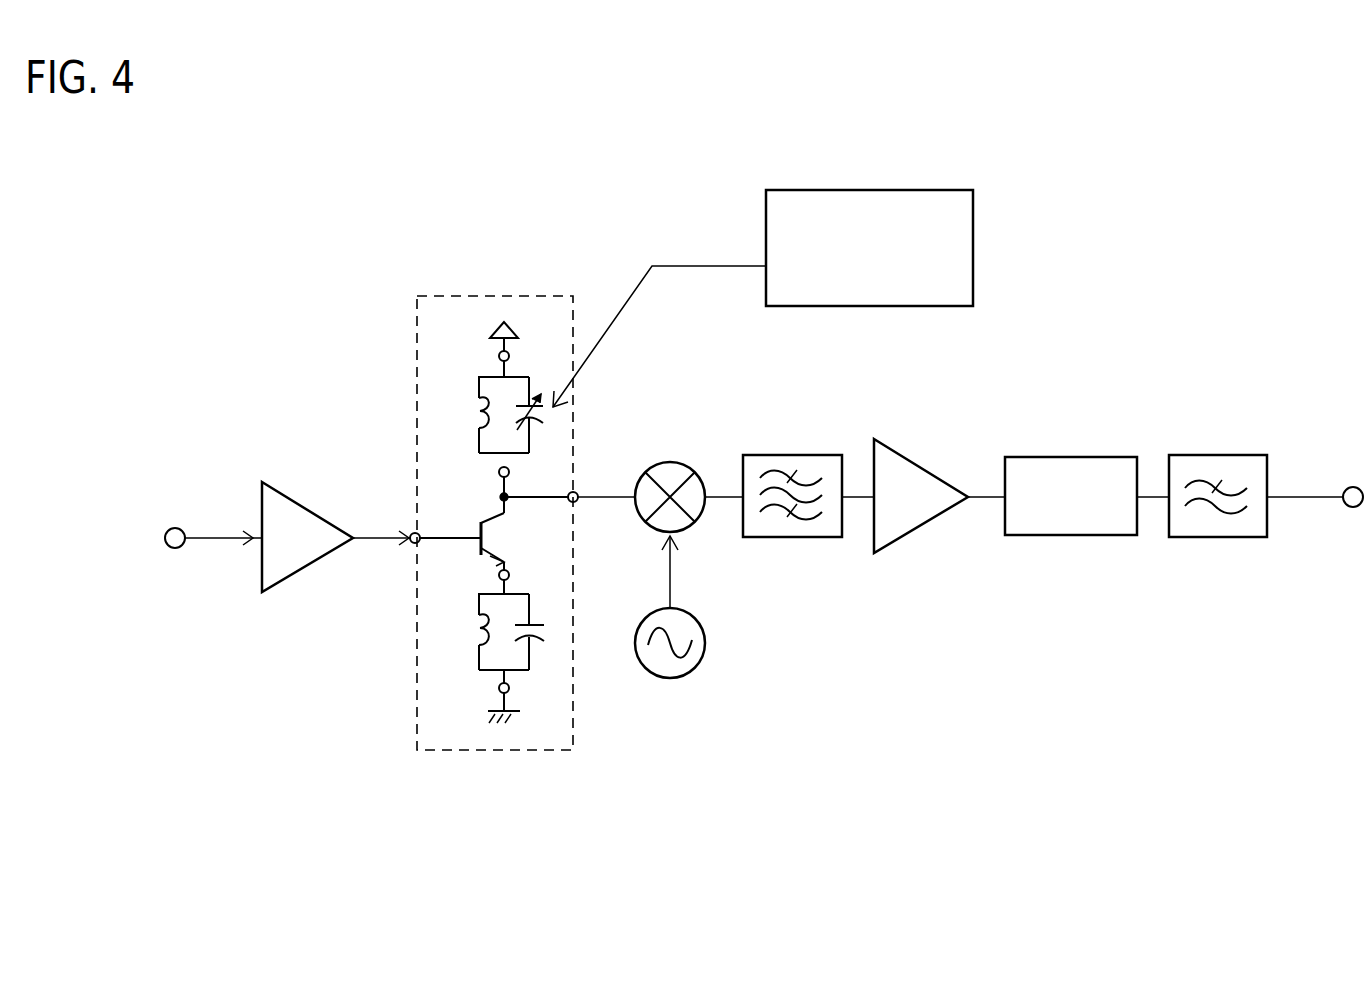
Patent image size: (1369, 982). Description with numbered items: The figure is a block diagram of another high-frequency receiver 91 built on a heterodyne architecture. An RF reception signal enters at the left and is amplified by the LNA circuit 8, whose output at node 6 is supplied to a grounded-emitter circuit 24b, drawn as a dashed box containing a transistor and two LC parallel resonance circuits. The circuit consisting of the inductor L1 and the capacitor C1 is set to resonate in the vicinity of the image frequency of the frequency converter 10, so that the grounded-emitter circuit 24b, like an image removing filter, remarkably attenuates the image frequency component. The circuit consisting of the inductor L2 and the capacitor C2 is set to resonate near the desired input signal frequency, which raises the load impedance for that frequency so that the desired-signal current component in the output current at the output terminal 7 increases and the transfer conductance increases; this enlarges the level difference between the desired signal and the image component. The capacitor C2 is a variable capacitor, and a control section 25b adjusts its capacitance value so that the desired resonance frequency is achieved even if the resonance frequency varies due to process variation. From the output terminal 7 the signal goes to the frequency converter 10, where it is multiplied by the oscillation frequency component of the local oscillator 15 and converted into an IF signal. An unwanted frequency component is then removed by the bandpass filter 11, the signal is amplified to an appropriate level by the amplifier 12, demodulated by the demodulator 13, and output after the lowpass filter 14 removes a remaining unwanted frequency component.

The high-frequency receiver 91 is at (298, 330).
The LNA circuit 8 is at (309, 510).
The input node 6 is at (417, 525).
The grounded-emitter circuit 24b is at (473, 296).
The inductor L2 is at (488, 415).
The capacitor C2 is at (543, 415).
The inductor L1 is at (487, 632).
The capacitor C1 is at (542, 632).
The output terminal 7 is at (569, 484).
The frequency converter 10 is at (671, 461).
The bandpass filter 11 is at (794, 455).
The amplifier 12 is at (921, 466).
The demodulator 13 is at (1076, 457).
The lowpass filter 14 is at (1223, 455).
The local oscillator 15 is at (706, 644).
The control section 25b is at (901, 190).